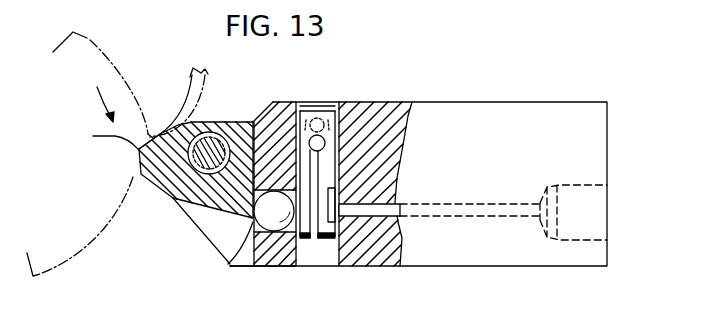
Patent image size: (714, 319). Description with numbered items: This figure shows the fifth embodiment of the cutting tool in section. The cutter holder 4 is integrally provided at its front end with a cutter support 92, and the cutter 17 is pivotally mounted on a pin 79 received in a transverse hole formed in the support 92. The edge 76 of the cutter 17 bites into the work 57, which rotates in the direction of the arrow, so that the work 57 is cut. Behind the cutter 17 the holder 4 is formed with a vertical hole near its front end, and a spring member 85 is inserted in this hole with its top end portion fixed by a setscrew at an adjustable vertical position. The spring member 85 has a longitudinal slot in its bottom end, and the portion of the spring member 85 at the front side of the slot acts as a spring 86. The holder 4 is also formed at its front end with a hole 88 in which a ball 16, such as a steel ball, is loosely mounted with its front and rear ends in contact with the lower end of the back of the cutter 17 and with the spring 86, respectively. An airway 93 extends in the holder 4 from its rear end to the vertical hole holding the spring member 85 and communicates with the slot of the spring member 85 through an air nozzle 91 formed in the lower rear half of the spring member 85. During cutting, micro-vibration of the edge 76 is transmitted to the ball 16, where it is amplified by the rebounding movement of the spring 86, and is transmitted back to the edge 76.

The cutter holder 4 is at (472, 112).
The ball 16 is at (233, 264).
The cutter 17 is at (133, 170).
The work 57 is at (121, 74).
The edge 76 is at (101, 139).
The pin 79 is at (218, 120).
The spring member 85 is at (340, 102).
The spring 86 is at (308, 236).
The vertical hole 88 is at (280, 232).
The air nozzle 91 is at (360, 258).
The cutter support 92 is at (205, 215).
The airway 93 is at (495, 215).